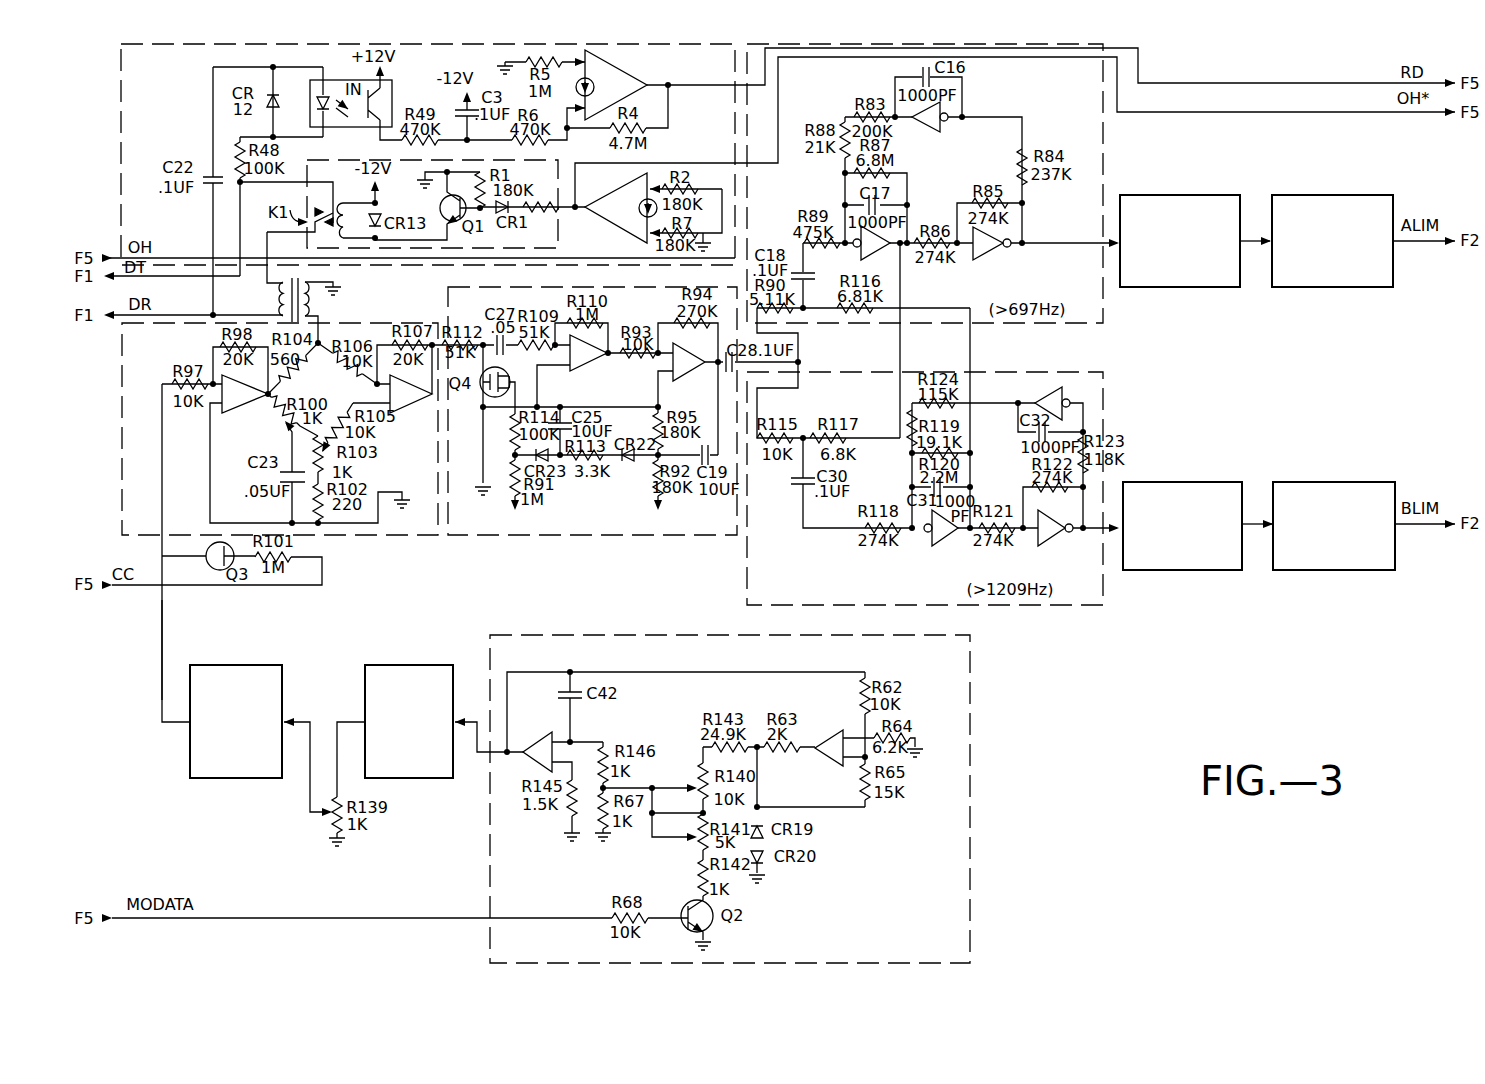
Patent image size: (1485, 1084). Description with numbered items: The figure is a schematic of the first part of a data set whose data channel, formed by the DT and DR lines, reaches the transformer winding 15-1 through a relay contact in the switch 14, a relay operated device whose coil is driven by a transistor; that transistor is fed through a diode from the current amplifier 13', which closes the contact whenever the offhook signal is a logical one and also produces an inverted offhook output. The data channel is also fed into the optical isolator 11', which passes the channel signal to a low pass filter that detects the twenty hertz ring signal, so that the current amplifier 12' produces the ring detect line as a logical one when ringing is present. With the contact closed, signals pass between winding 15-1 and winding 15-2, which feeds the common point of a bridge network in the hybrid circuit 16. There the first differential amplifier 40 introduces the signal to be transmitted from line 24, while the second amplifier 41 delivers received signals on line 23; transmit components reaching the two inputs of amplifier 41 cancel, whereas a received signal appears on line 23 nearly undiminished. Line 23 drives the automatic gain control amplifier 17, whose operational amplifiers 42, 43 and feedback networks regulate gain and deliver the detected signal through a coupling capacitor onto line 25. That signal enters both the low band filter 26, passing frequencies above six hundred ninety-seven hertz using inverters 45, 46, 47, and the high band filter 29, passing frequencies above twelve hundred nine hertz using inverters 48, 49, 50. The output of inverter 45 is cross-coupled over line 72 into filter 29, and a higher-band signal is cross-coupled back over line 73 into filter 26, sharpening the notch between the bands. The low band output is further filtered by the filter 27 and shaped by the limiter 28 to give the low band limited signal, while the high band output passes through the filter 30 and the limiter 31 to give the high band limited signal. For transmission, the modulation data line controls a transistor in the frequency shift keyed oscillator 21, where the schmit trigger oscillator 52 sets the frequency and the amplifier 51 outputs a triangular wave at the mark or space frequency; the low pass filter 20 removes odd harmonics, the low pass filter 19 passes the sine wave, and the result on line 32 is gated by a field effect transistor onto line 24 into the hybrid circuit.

The optical isolator 11' is at (356, 94).
The current amplifier 12' is at (626, 85).
The current amplifier 13' is at (619, 211).
The switch 14 is at (548, 160).
The transformer winding 15-1 is at (276, 300).
The transformer winding 15-2 is at (318, 303).
The hybrid circuit 16 is at (422, 540).
The automatic gain control amplifier 17 is at (570, 536).
The low pass filter 19 is at (230, 779).
The low pass filter 20 is at (425, 779).
The frequency shift keyed oscillator 21 is at (972, 668).
The line 23 is at (443, 337).
The line 24 is at (162, 507).
The line 25 is at (805, 352).
The low band filter 26 is at (1103, 318).
The filter 27 is at (1178, 288).
The limiter 28 is at (1318, 288).
The high band filter 29 is at (1103, 375).
The filter 30 is at (1172, 481).
The limiter 31 is at (1310, 481).
The line 32 is at (162, 640).
The first differential amplifier 40 is at (243, 407).
The second amplifier 41 is at (412, 410).
The operational amplifier 42 is at (590, 368).
The operational amplifier 43 is at (690, 375).
The inverter 45 is at (863, 256).
The inverter 46 is at (925, 133).
The inverter 47 is at (985, 255).
The inverter 48 is at (945, 545).
The inverter 49 is at (1050, 395).
The inverter 50 is at (1050, 545).
The amplifier 51 is at (545, 735).
The schmit trigger oscillator 52 is at (825, 735).
The line 72 is at (902, 350).
The line 73 is at (972, 350).